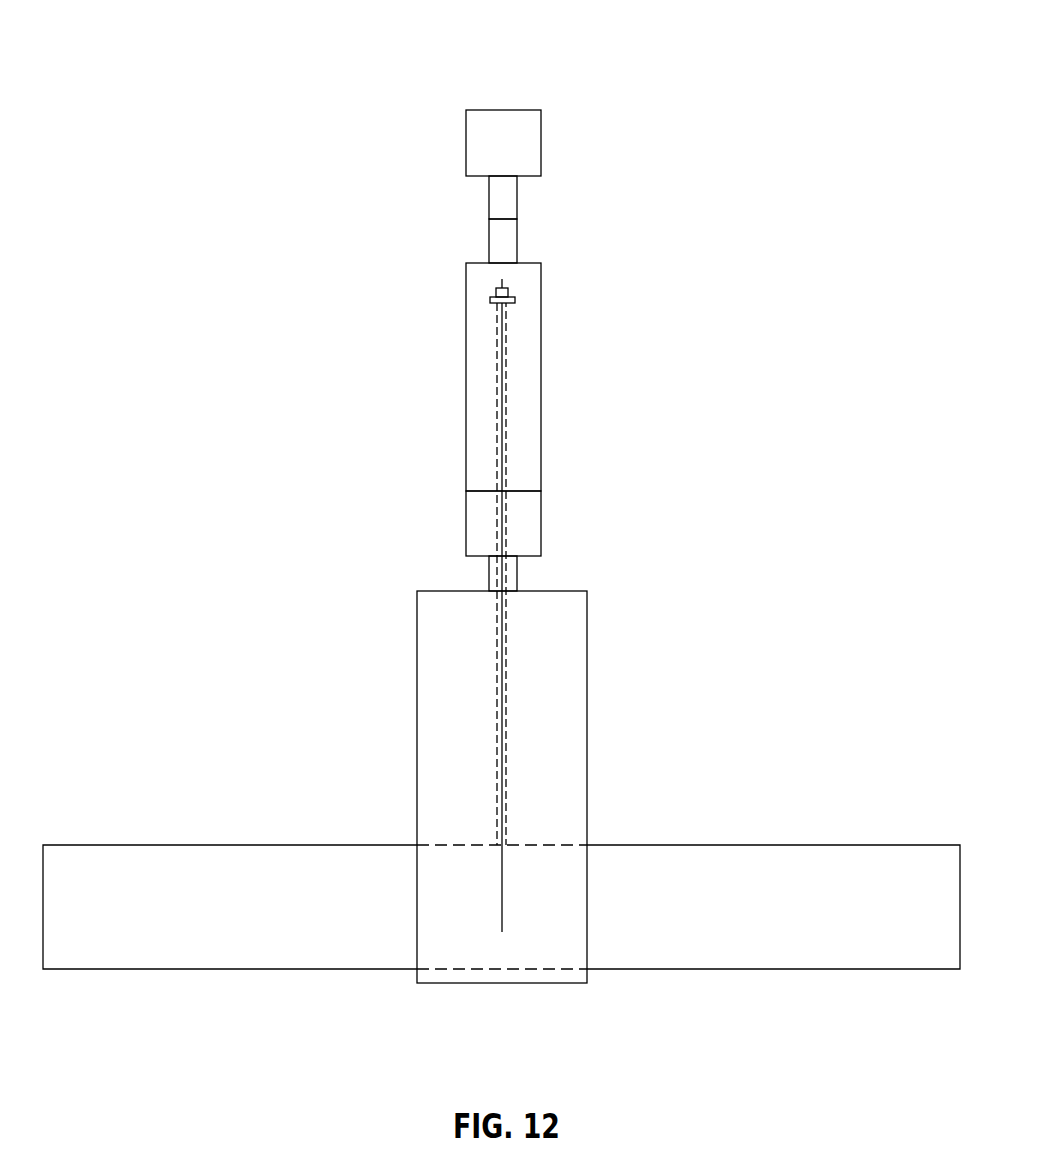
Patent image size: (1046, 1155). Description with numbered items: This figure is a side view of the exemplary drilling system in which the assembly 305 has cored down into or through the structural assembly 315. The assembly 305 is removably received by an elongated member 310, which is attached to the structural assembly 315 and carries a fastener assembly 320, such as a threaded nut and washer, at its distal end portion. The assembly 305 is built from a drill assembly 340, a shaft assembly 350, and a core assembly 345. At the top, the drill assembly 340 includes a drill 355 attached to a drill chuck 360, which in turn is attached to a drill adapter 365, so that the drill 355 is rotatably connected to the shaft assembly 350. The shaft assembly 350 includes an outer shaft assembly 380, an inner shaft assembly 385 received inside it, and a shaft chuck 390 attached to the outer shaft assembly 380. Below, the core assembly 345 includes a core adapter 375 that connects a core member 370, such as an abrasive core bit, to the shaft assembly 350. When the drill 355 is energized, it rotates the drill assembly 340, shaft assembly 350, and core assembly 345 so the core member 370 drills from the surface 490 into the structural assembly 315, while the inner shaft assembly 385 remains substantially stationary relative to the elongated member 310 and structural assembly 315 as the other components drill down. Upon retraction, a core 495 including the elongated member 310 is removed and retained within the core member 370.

The assembly 305 is at (383, 117).
The drill assembly 340 is at (393, 200).
The drill 355 is at (558, 140).
The drill chuck 360 is at (525, 206).
The drill adapter 365 is at (525, 243).
The shaft assembly 350 is at (368, 397).
The fastener assembly 320 is at (517, 288).
The outer shaft assembly 380 is at (553, 365).
The inner shaft assembly 385 is at (516, 449).
The shaft chuck 390 is at (552, 512).
The core adapter 375 is at (535, 575).
The core assembly 345 is at (333, 647).
The core member 370 is at (595, 775).
The surface 490 is at (775, 845).
The core 495 is at (453, 958).
The elongated member 310 is at (523, 932).
The structural assembly 315 is at (767, 988).